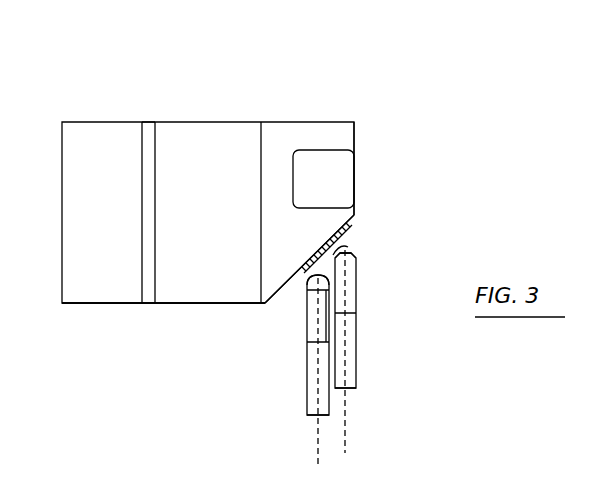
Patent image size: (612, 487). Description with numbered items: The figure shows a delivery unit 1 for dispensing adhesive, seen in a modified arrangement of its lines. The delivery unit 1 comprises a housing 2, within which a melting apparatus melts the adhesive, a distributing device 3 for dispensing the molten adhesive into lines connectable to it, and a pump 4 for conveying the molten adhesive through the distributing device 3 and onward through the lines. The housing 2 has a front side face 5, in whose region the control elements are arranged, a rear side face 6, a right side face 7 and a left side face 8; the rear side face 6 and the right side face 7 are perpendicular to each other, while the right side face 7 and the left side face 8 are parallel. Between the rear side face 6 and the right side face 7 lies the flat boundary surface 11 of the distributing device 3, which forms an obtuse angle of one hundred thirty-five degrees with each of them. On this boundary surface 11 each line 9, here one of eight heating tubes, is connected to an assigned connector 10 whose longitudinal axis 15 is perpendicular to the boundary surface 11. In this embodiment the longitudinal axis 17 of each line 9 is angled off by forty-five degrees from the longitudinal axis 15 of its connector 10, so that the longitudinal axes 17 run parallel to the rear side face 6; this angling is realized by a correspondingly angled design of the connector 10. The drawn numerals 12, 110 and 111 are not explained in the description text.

The delivery unit 1 is at (322, 89).
The housing 2 is at (203, 321).
The distributing device 3 is at (348, 248).
The pump 4 is at (352, 178).
The front side face 5 is at (62, 238).
The rear side face 6 is at (354, 133).
The right side face 7 is at (175, 303).
The left side face 8 is at (183, 122).
The line 9 is at (296, 367).
The connector 10 is at (343, 226).
The boundary surface 11 is at (296, 291).
The slot 12 is at (168, 130).
The longitudinal axis of the connector 15 is at (362, 260).
The longitudinal axis of the line 17 is at (317, 407).
The pin tip 110 is at (308, 293).
The contact point 111 is at (333, 258).